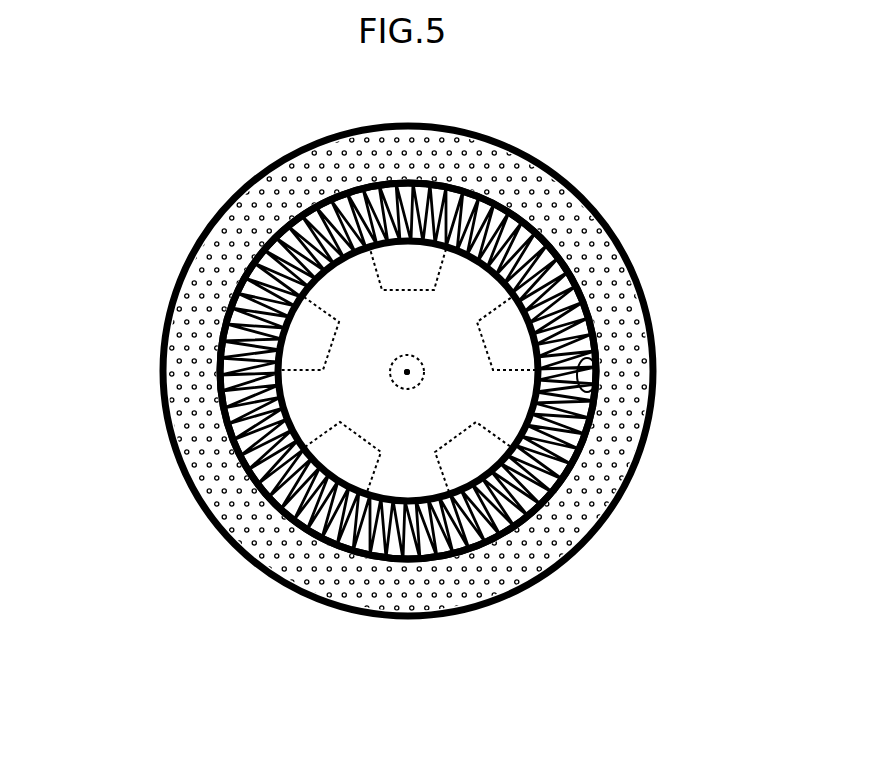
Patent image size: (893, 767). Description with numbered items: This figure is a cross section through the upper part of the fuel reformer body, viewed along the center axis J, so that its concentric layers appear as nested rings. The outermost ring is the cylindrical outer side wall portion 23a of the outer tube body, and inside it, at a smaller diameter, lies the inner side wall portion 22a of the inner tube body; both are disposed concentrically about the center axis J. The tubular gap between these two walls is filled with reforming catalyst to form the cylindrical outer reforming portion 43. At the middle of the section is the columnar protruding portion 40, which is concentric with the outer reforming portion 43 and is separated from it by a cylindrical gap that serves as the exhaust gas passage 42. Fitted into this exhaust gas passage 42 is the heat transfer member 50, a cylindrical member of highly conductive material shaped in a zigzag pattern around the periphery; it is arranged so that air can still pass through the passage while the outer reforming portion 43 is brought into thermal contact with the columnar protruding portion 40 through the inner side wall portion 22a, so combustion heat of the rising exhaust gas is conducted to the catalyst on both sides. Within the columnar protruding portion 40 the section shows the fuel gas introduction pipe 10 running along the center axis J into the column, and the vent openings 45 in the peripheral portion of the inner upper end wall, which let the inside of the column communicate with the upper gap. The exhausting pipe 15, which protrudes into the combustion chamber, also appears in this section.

The fuel gas introduction pipe 10 is at (390, 368).
The center axis J is at (408, 372).
The exhausting pipe 15 is at (597, 358).
The inner side wall portion 22a is at (500, 200).
The outer side wall portion 23a is at (607, 215).
The columnar protruding portion 40 is at (410, 487).
The exhaust gas passage 42 is at (220, 427).
The outer reforming portion 43 is at (612, 505).
The vent openings 45 is at (407, 262).
The heat transfer member 50 is at (213, 348).